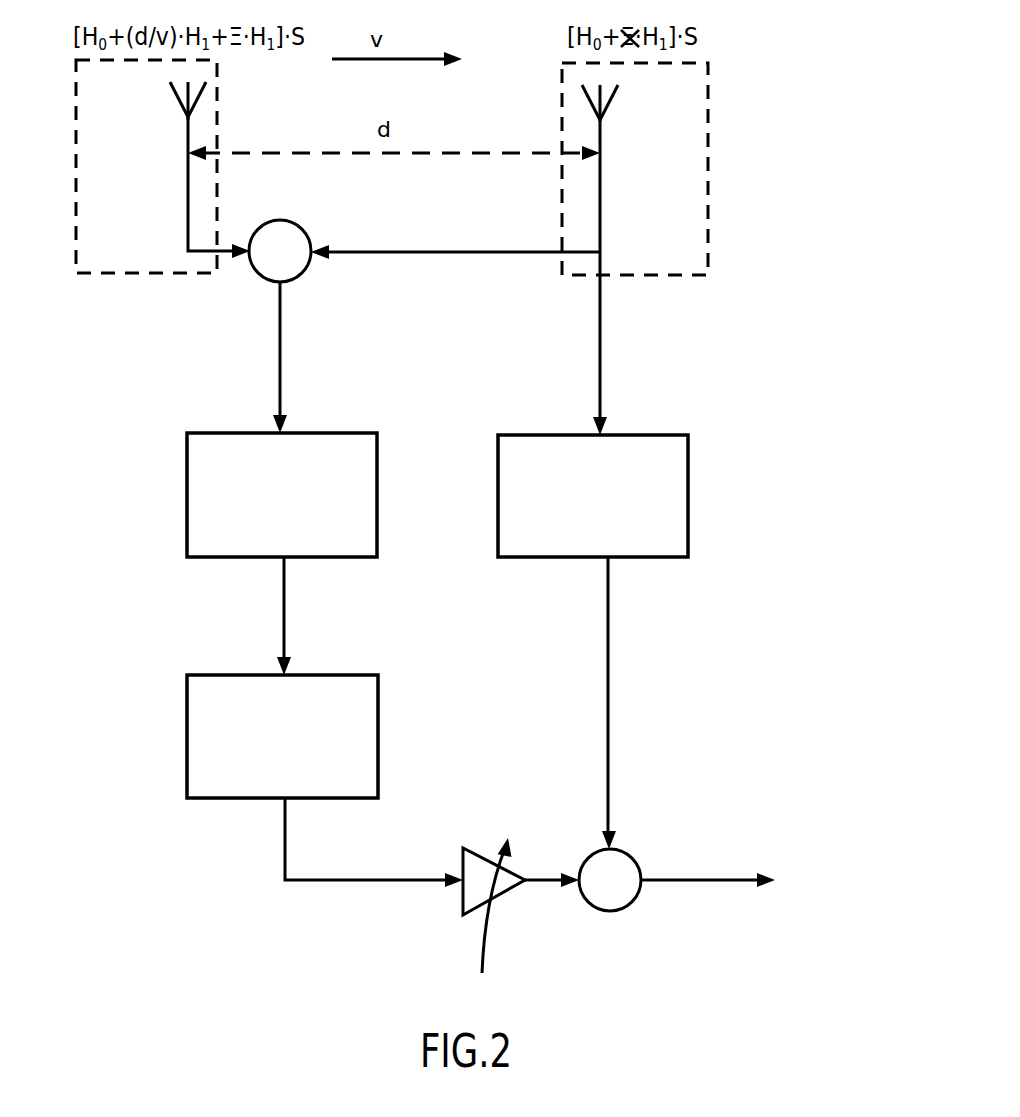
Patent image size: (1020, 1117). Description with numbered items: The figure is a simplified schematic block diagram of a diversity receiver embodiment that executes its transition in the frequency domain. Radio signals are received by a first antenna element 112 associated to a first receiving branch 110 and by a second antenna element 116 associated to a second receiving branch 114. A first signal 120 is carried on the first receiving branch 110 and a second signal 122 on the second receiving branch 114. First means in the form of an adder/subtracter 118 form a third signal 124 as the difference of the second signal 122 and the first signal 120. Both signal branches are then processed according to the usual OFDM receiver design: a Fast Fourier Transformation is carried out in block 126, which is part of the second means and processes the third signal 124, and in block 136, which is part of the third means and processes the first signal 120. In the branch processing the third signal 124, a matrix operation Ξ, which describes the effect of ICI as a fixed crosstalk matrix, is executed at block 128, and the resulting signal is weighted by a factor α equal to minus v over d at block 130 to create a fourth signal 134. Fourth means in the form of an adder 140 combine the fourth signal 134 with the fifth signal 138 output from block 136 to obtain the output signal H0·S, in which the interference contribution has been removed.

The first receiving branch 110 is at (708, 272).
The first antenna element 112 is at (612, 106).
The second receiving branch 114 is at (138, 276).
The second antenna element 116 is at (173, 103).
The adder/subtracter 118 is at (306, 272).
The first signal 120 is at (600, 220).
The second signal 122 is at (188, 215).
The third signal 124 is at (282, 345).
The FFT block 126 is at (377, 488).
The matrix operation block 128 is at (378, 730).
The weighting block 130 is at (463, 858).
The fourth signal 134 is at (545, 884).
The FFT block 136 is at (688, 490).
The fifth signal 138 is at (608, 740).
The adder 140 is at (632, 905).